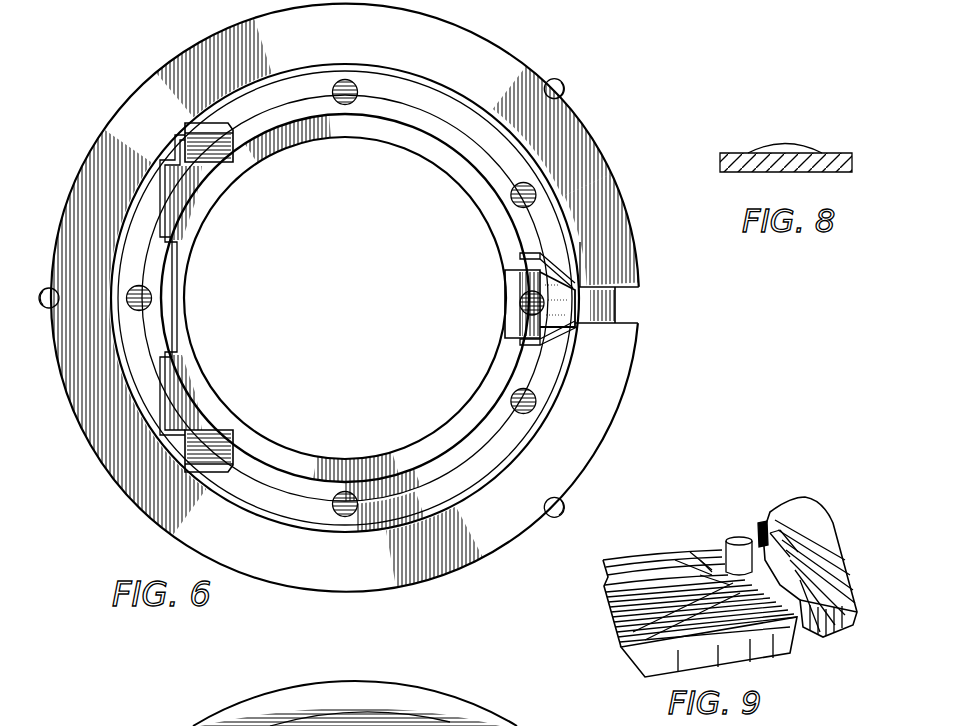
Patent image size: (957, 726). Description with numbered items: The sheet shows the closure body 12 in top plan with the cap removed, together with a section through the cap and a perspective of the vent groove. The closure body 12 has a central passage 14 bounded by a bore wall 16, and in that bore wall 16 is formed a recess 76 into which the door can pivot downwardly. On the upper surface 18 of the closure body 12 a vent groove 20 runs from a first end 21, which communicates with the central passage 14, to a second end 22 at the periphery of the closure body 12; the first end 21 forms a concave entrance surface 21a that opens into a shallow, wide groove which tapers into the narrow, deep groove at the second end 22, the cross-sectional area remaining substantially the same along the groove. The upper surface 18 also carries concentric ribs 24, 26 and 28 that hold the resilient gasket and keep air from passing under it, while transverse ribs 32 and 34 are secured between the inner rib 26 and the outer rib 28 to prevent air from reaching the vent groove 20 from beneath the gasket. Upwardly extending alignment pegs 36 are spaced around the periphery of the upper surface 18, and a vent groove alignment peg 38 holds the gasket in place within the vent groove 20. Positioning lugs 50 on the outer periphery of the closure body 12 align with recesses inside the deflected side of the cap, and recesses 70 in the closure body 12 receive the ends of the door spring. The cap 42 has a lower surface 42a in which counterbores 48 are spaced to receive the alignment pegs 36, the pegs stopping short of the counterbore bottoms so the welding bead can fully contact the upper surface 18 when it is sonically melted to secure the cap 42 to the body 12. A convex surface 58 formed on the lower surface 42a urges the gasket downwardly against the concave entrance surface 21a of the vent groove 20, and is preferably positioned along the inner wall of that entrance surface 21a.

In FIG. 6, the closure body 12 is at (588, 108).
In FIG. 9, the closure body 12 is at (775, 664).
In FIG. 6, the central passage 14 is at (455, 200).
In FIG. 6, the bore wall 16 is at (315, 460).
In FIG. 6, the upper surface 18 is at (567, 152).
In FIG. 9, the upper surface 18 is at (835, 560).
In FIG. 6, the vent groove 20 is at (578, 285).
In FIG. 9, the vent groove 20 is at (768, 522).
In FIG. 6, the first end 21 is at (505, 308).
In FIG. 9, the first end 21 is at (700, 553).
In FIG. 6, the concave entrance surface 21a is at (510, 295).
In FIG. 9, the concave entrance surface 21a is at (712, 555).
In FIG. 6, the second end 22 is at (625, 310).
In FIG. 9, the second end 22 is at (808, 640).
In FIG. 6, the concentric rib 24 is at (262, 462).
In FIG. 9, the concentric rib 24 is at (617, 565).
In FIG. 6, the inner rib 26 is at (420, 460).
In FIG. 9, the inner rib 26 is at (608, 585).
In FIG. 6, the outer rib 28 is at (540, 428).
In FIG. 9, the outer rib 28 is at (820, 552).
In FIG. 6, the transverse rib 32 is at (528, 256).
In FIG. 9, the transverse rib 32 is at (808, 545).
In FIG. 6, the transverse rib 34 is at (548, 350).
In FIG. 9, the transverse rib 34 is at (622, 627).
In FIG. 6, the alignment pegs 36 is at (352, 84).
In FIG. 6, the vent groove alignment peg 38 is at (525, 315).
In FIG. 9, the vent groove alignment peg 38 is at (736, 538).
In FIG. 8, the cap 42 is at (732, 155).
In FIG. 8, the lower surface 42a is at (832, 155).
In FIG. 6, the counterbores 48 is at (396, 725).
In FIG. 6, the positioning lugs 50 is at (558, 82).
In FIG. 8, the convex surface 58 is at (782, 150).
In FIG. 6, the recesses 70 is at (205, 160).
In FIG. 6, the recess 76 is at (200, 225).